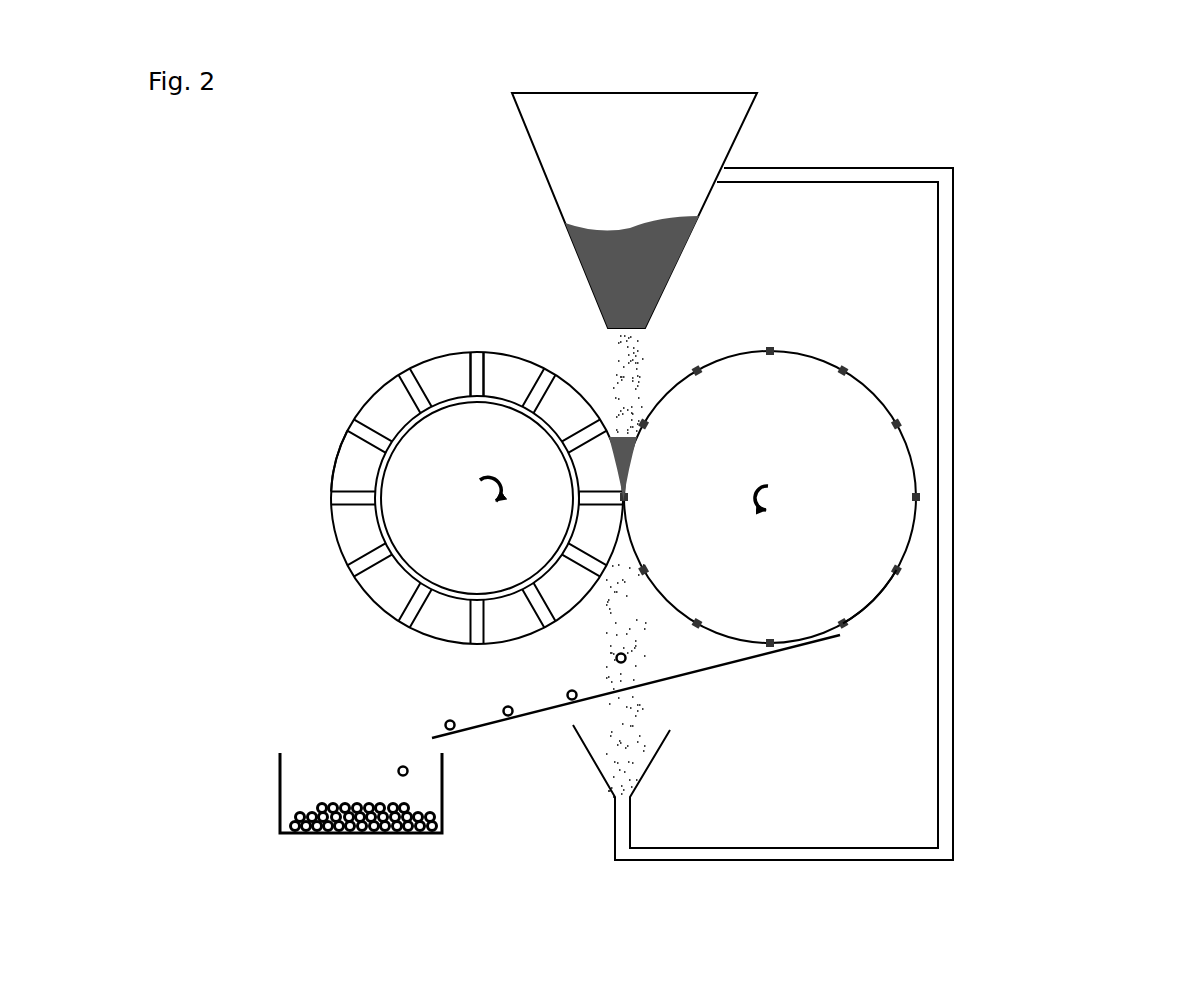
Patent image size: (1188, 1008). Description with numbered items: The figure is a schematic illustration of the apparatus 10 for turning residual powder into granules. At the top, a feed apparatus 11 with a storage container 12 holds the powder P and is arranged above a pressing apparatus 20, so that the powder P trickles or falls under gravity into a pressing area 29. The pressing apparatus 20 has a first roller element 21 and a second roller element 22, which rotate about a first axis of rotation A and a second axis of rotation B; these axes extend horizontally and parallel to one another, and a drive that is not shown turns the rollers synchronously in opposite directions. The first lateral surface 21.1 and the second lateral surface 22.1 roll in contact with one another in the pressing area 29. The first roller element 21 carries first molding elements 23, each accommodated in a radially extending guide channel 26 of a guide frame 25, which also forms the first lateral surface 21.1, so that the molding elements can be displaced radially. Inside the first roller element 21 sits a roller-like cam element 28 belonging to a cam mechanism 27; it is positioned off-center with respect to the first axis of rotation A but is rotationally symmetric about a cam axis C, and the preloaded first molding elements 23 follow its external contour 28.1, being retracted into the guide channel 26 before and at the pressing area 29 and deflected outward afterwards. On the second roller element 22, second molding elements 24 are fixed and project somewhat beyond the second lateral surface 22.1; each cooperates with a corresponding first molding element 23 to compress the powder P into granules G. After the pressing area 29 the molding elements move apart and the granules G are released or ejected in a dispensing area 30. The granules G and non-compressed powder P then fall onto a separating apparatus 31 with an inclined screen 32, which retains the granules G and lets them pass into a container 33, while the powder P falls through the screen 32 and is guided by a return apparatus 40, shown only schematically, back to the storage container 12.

The apparatus 10 is at (1084, 185).
The feed apparatus 11 is at (528, 207).
The storage container 12 is at (747, 120).
The pressing apparatus 20 is at (726, 314).
The first roller element 21 is at (425, 318).
The first lateral surface 21.1 is at (434, 646).
The second roller element 22 is at (880, 375).
The second lateral surface 22.1 is at (873, 612).
The first molding element 23 is at (412, 378).
The second molding element 24 is at (770, 350).
The guide frame 25 is at (371, 482).
The guide channel 26 is at (479, 347).
The cam mechanism 27 is at (500, 390).
The cam element 28 is at (436, 506).
The external contour 28.1 is at (578, 524).
The pressing area 29 is at (644, 478).
The dispensing area 30 is at (580, 618).
The separating apparatus 31 is at (787, 684).
The screen 32 is at (546, 712).
The container 33 is at (280, 784).
The return apparatus 40 is at (968, 582).
The powder P is at (615, 237).
The granules G is at (614, 660).
The first axis of rotation A is at (482, 491).
The second axis of rotation B is at (766, 496).
The cam axis C is at (477, 498).